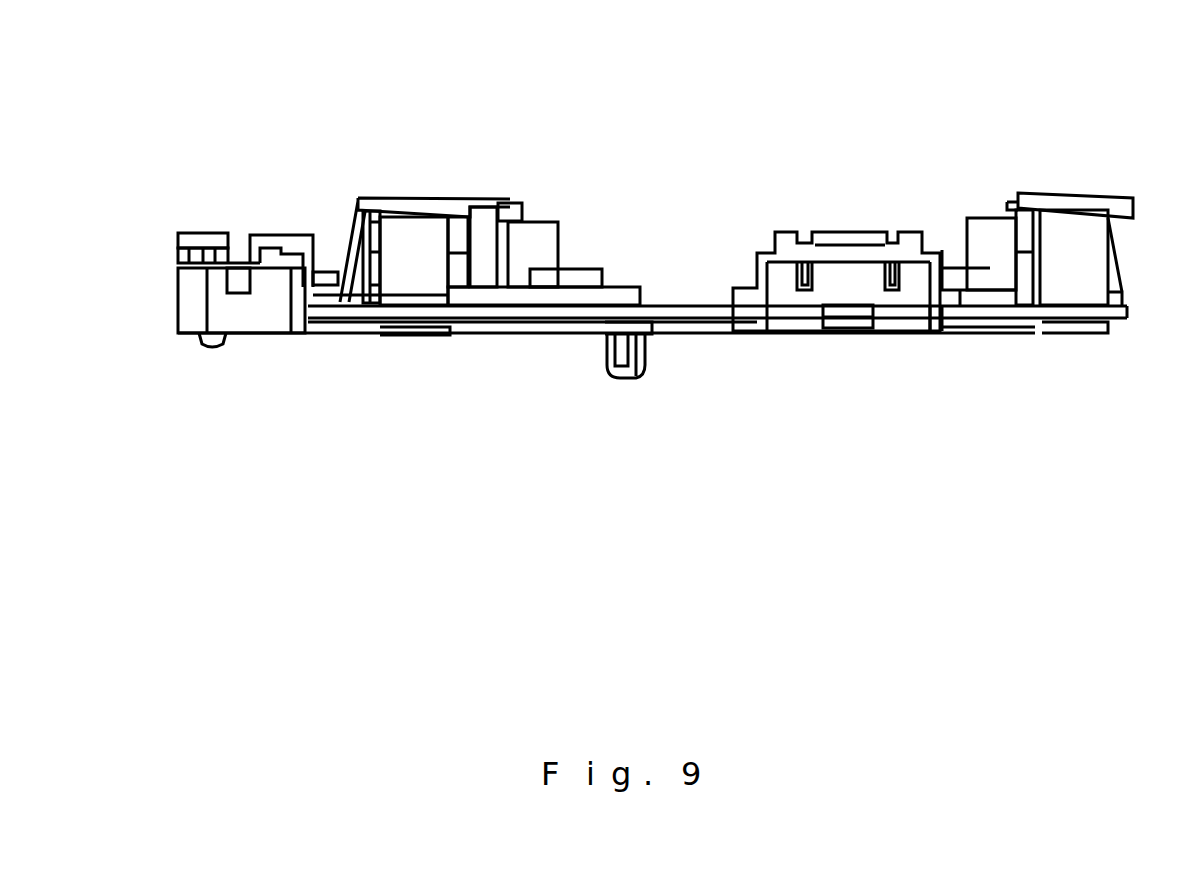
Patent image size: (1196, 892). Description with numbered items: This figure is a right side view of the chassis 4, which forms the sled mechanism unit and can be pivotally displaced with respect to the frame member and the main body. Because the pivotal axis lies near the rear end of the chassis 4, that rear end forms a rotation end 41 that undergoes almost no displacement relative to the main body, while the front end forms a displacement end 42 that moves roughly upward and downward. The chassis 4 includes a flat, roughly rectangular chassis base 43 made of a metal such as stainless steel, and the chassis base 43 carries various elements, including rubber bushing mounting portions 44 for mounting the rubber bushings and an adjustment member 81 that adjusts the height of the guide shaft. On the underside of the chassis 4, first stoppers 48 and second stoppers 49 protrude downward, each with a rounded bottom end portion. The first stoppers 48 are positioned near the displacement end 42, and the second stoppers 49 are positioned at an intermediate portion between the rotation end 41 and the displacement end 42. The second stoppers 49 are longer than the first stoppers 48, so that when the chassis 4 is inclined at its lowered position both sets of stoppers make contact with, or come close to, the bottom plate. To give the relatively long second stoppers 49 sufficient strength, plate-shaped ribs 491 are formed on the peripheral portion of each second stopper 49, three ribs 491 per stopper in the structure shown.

The chassis 4 is at (694, 118).
The rotation end 41 is at (1122, 308).
The displacement end 42 is at (176, 302).
The chassis base 43 is at (464, 309).
The rubber bushing mounting portion 44 is at (239, 252).
The first stopper 48 is at (213, 350).
The second stopper 49 is at (622, 380).
The rib 491 is at (608, 358).
The adjustment member 81 is at (408, 188).